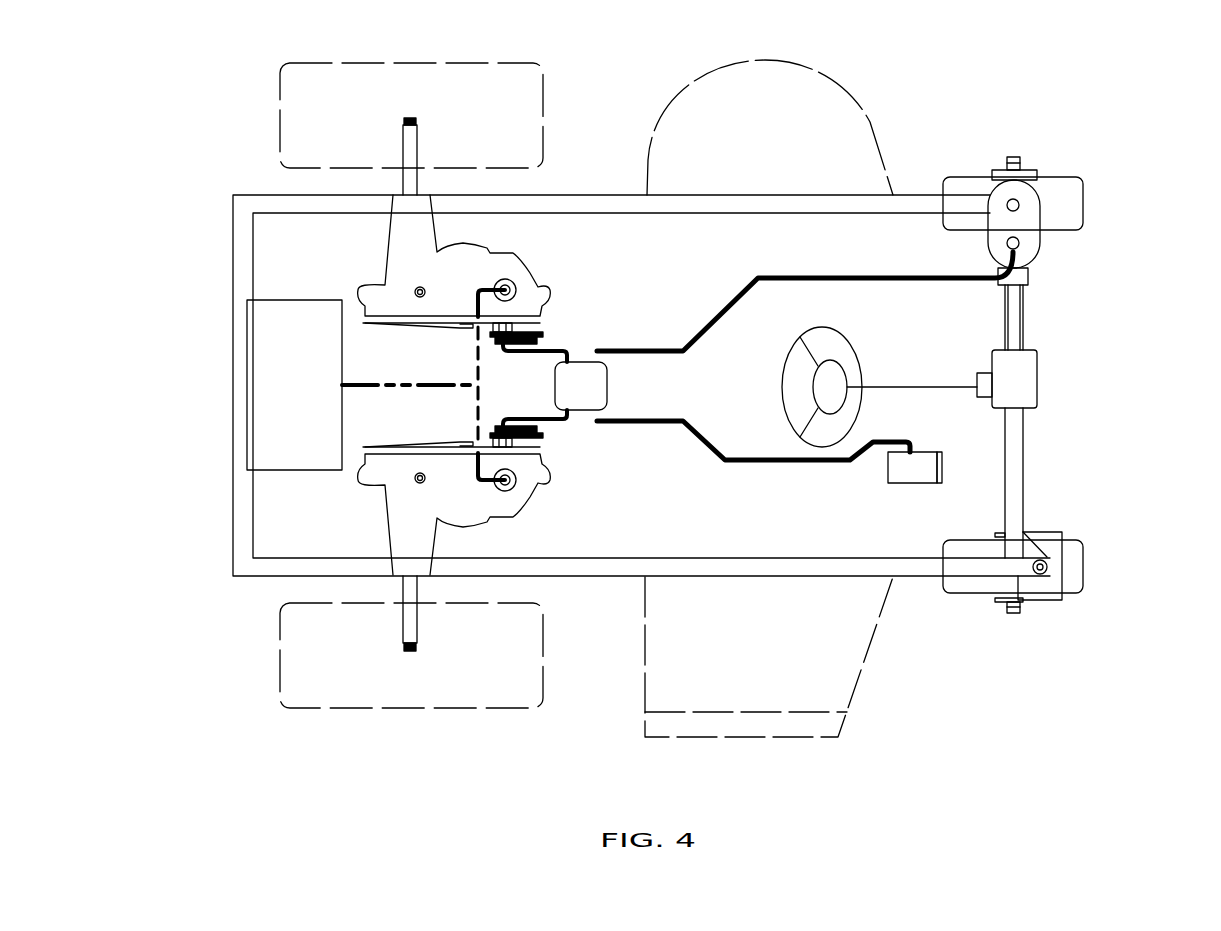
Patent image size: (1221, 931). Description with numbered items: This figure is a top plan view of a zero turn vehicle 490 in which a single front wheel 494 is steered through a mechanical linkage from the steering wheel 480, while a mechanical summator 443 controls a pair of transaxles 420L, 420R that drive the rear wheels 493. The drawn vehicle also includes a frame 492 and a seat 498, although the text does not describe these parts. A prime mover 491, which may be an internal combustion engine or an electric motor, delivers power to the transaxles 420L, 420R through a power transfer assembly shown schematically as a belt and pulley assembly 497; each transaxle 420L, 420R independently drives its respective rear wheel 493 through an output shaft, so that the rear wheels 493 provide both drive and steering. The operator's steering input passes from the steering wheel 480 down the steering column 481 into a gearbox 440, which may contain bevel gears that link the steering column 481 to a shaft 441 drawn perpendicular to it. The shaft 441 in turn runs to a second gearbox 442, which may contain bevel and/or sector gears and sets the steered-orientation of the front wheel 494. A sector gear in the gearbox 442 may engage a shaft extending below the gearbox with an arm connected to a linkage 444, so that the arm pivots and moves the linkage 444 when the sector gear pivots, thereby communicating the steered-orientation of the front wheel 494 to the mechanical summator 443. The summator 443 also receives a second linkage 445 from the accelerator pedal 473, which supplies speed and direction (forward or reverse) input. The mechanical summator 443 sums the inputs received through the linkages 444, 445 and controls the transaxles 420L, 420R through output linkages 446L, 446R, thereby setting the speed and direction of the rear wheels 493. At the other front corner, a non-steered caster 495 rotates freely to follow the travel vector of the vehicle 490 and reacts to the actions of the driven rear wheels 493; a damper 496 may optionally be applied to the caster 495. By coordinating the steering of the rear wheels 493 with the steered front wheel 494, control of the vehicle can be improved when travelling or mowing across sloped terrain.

The zero turn vehicle 490 is at (147, 102).
The frame 492 is at (603, 195).
The rear wheels 493 is at (468, 63).
The seat 498 is at (686, 94).
The prime mover 491 is at (318, 451).
The belt and pulley assembly 497 is at (342, 385).
The transaxle 420L is at (387, 246).
The transaxle 420R is at (387, 523).
The output linkage 446L is at (552, 350).
The output linkage 446R is at (552, 421).
The mechanical summator 443 is at (607, 387).
The linkage 444 is at (882, 277).
The linkage 445 is at (790, 462).
The accelerator pedal 473 is at (913, 483).
The steering wheel 480 is at (822, 327).
The steering column 481 is at (913, 386).
The gearbox 440 is at (1037, 383).
The shaft 441 is at (1023, 314).
The gearbox 442 is at (1015, 190).
The front wheel 494 is at (1084, 206).
The front non-steered caster 495 is at (1084, 567).
The damper 496 is at (1044, 574).